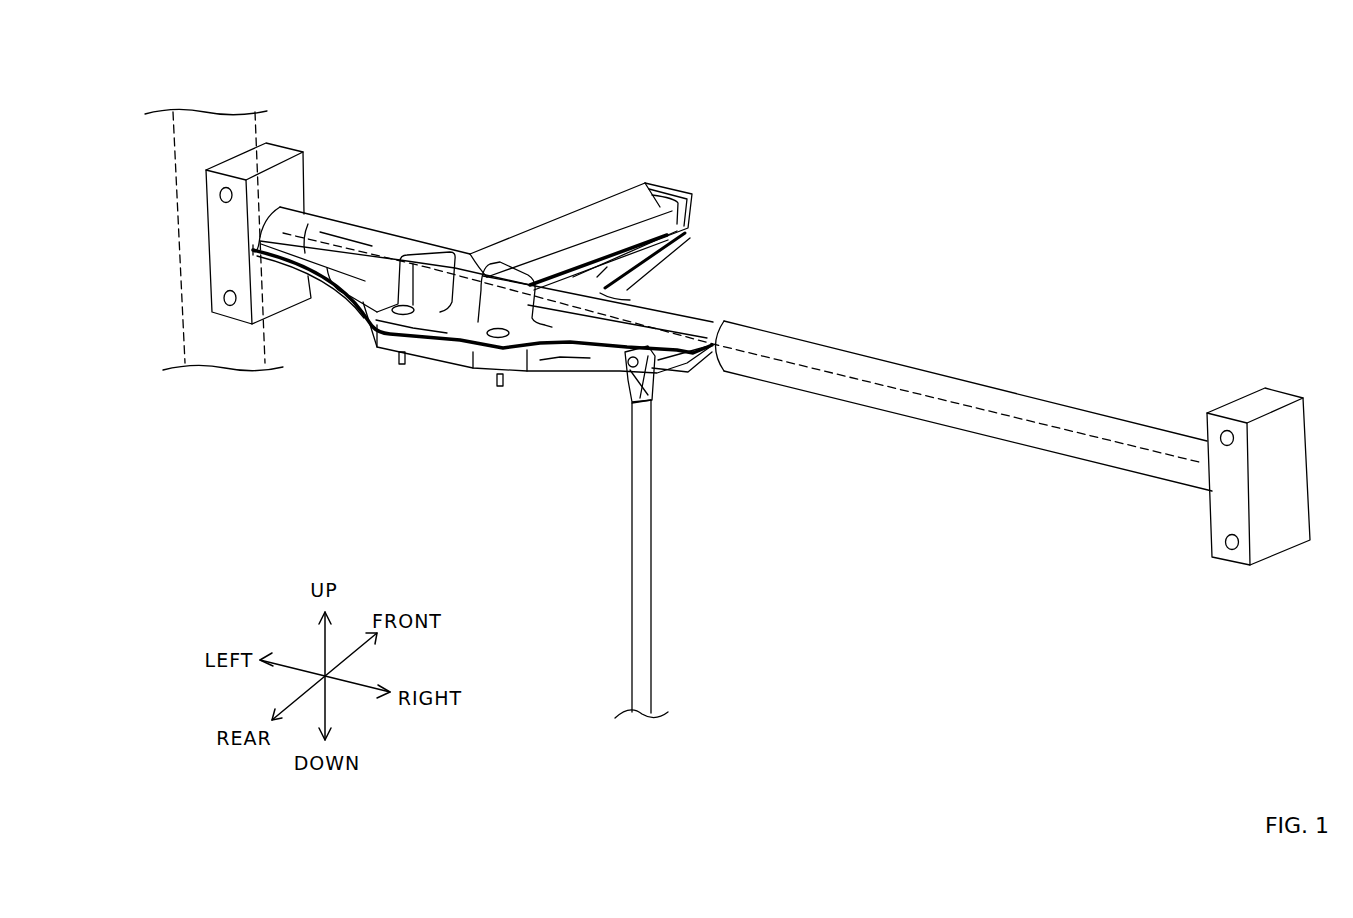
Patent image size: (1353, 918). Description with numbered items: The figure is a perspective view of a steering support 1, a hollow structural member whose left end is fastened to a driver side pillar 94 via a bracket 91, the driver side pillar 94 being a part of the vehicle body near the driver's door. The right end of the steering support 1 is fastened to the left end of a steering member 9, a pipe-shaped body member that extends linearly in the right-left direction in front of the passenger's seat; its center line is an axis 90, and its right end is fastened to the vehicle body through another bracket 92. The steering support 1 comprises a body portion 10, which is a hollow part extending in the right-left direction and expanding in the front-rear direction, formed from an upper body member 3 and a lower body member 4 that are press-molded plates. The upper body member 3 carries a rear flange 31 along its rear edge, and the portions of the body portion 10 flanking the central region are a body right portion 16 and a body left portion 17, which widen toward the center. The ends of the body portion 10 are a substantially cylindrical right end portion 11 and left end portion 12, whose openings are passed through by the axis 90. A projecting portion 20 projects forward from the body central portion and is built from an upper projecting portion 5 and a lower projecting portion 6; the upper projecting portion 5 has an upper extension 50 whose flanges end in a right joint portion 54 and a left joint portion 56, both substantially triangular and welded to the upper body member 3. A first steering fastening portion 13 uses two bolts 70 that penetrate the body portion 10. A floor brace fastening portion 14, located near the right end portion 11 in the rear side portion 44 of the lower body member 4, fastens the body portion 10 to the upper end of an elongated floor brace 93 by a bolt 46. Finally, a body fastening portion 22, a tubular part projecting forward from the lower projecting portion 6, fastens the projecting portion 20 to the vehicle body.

The steering support 1 is at (748, 131).
The upper body member 3 is at (333, 233).
The lower body member 4 is at (603, 377).
The upper projecting portion 5 is at (573, 228).
The lower projecting portion 6 is at (650, 268).
The steering member 9 is at (940, 415).
The body portion 10 is at (399, 172).
The right end portion 11 is at (712, 325).
The left end portion 12 is at (280, 207).
The first steering fastening portion 13 is at (485, 395).
The floor brace fastening portion 14 is at (690, 373).
The body right portion 16 is at (630, 300).
The body left portion 17 is at (385, 230).
The projecting portion 20 is at (530, 202).
The body fastening portion 22 is at (697, 212).
The rear flange 31 is at (333, 293).
The rear side portion 44 is at (553, 357).
The bolt 46 is at (647, 390).
The upper extension 50 is at (480, 260).
The right joint portion 54 is at (510, 317).
The left joint portion 56 is at (378, 323).
The bolts 70 is at (397, 365).
The axis 90 is at (1023, 420).
The bracket 91 is at (290, 153).
The bracket 92 is at (1250, 390).
The floor brace 93 is at (647, 558).
The driver side pillar 94 is at (242, 352).